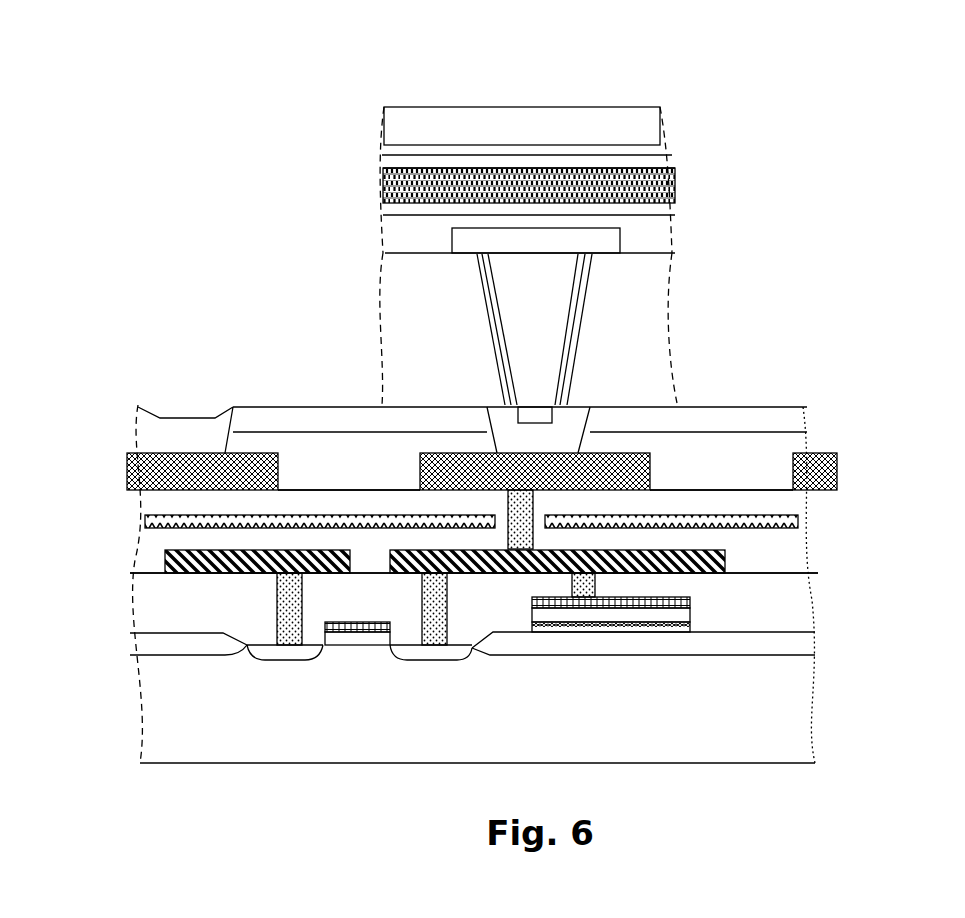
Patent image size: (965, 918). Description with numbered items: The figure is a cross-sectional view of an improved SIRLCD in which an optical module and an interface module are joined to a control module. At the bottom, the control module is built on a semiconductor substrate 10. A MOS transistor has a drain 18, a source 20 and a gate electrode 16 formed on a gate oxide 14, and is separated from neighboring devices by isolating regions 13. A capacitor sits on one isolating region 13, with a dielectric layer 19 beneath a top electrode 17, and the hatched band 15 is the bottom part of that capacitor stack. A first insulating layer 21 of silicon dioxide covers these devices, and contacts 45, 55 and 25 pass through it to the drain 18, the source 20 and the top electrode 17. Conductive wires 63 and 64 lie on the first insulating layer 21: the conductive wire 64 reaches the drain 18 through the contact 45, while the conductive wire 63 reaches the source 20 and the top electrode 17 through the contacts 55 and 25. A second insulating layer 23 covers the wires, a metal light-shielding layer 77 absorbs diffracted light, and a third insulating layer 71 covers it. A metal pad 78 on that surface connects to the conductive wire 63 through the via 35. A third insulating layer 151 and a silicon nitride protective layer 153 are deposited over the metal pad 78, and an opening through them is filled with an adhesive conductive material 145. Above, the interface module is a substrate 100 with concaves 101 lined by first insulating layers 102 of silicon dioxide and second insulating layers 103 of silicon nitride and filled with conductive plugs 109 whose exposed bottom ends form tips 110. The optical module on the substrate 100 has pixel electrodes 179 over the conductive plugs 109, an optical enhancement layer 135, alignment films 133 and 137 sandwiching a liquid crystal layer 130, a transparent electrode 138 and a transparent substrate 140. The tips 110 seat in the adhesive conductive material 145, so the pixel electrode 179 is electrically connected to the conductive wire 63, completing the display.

The semiconductor substrate 10 is at (702, 715).
The isolating regions 13 is at (508, 645).
The gate oxide 14 is at (353, 635).
The capacitor bottom electrode 15 is at (632, 633).
The gate electrode 16 is at (373, 622).
The top electrode 17 is at (690, 597).
The drain 18 is at (287, 658).
The dielectric layer 19 is at (678, 613).
The source 20 is at (425, 655).
The first insulating layer 21 is at (790, 585).
The second insulating layer 23 is at (793, 555).
The contact 25 is at (588, 583).
The via 35 is at (508, 508).
The contact 45 is at (285, 608).
The contact 55 is at (447, 598).
The conductive wire 63 is at (677, 553).
The conductive wire 64 is at (163, 563).
The third insulating layer 71 is at (777, 503).
The light-shielding layer 77 is at (798, 522).
The metal pad 78 is at (612, 453).
The substrate 100 is at (638, 345).
The concaves 101 is at (598, 308).
The first insulating layers 102 is at (590, 288).
The second insulating layers 103 is at (475, 258).
The conductive plugs 109 is at (530, 297).
The tips 110 is at (533, 417).
The liquid crystal layer 130 is at (620, 190).
The alignment film 133 is at (400, 208).
The optical enhancement layer 135 is at (410, 230).
The alignment film 137 is at (630, 162).
The transparent electrode 138 is at (642, 150).
The transparent substrate 140 is at (548, 133).
The adhesive conductive material 145 is at (512, 428).
The third insulating layer 151 is at (752, 457).
The protective layer 153 is at (787, 417).
The pixel electrodes 179 is at (620, 235).